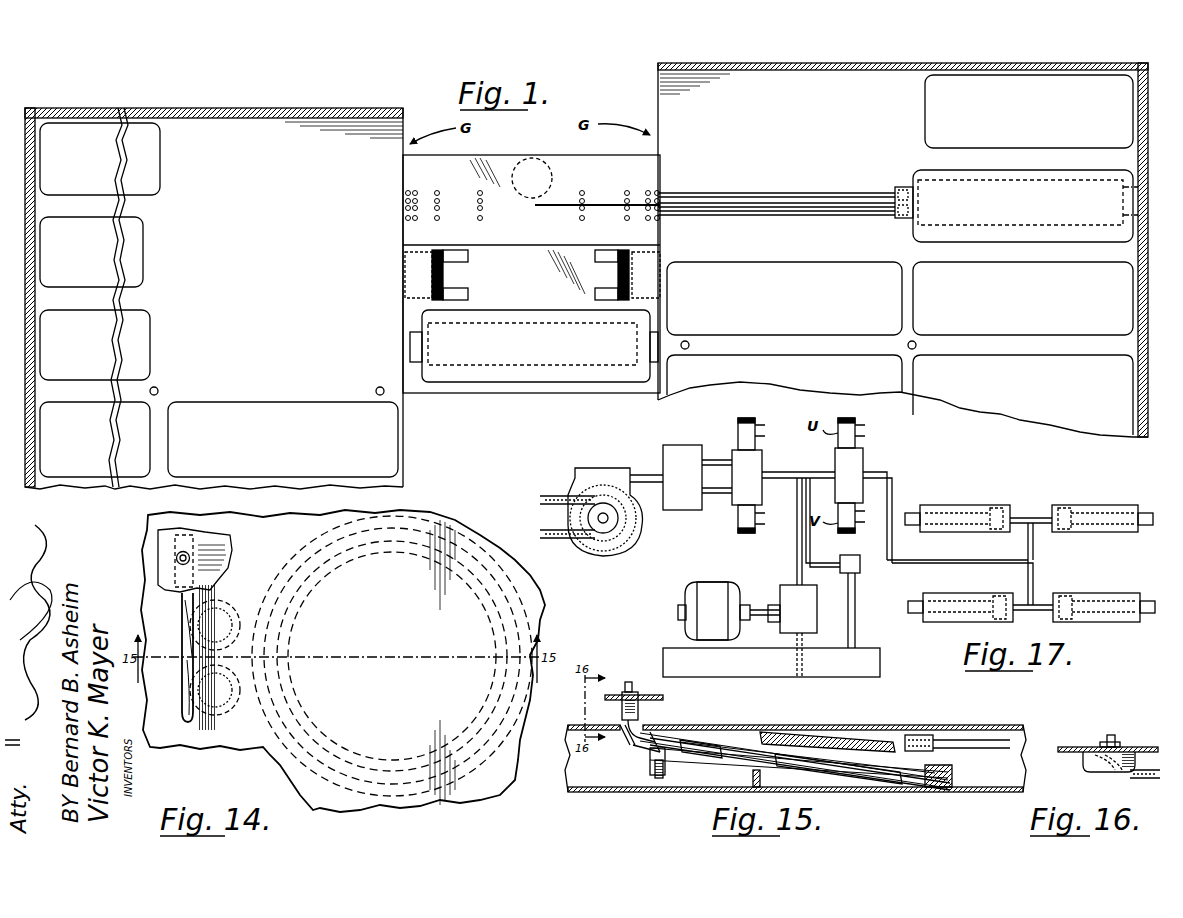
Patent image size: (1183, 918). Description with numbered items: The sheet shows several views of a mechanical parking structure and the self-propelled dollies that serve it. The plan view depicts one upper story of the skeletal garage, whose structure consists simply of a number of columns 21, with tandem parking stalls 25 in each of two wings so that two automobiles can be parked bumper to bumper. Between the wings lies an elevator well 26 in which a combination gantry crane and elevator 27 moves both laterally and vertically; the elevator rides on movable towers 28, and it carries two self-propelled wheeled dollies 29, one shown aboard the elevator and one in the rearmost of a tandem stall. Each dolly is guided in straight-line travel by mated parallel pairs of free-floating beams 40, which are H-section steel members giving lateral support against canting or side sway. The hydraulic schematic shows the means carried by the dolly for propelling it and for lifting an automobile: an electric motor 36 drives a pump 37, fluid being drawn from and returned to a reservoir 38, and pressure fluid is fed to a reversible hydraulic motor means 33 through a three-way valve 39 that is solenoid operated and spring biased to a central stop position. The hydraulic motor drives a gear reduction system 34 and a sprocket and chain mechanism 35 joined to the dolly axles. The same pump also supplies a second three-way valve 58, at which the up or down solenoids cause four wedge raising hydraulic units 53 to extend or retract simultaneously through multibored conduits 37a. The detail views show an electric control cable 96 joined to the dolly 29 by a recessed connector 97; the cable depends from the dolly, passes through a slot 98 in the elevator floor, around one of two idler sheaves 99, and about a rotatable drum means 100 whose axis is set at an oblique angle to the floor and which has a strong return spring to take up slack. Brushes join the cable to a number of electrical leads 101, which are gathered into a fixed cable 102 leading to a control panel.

In FIG. 1, the columns 21 is at (158, 388).
In FIG. 1, the tandem parking stalls 25 is at (143, 226).
In FIG. 1, the elevator well 26 is at (427, 90).
In FIG. 1, the combination gantry crane and elevator 27 is at (462, 408).
In FIG. 14, the combination gantry crane and elevator 27 is at (145, 528).
In FIG. 15, the combination gantry crane and elevator 27 is at (572, 725).
In FIG. 1, the movable columns or towers 28 is at (403, 272).
In FIG. 1, the self-propelled wheeled dolly 29 is at (410, 345).
In FIG. 14, the self-propelled wheeled dolly 29 is at (230, 550).
In FIG. 15, the self-propelled wheeled dolly 29 is at (645, 695).
In FIG. 16, the self-propelled wheeled dolly 29 is at (1073, 747).
In FIG. 17, the hydraulic motor means 33 is at (682, 445).
In FIG. 17, the gear reduction system 34 is at (605, 468).
In FIG. 17, the sprocket and chain mechanism 35 is at (556, 533).
In FIG. 17, the electric motor 36 is at (715, 582).
In FIG. 17, the pump 37 is at (780, 592).
In FIG. 17, the multibored conduits 37a is at (806, 520).
In FIG. 17, the reservoir 38 is at (673, 648).
In FIG. 17, the three-way valve 39 is at (750, 467).
In FIG. 1, the free-floating beams 40 is at (752, 193).
In FIG. 17, the wedge raising hydraulic units 53 is at (960, 505).
In FIG. 17, the three-way valve 58 is at (853, 465).
In FIG. 14, the electric control cable 96 is at (190, 557).
In FIG. 15, the electric control cable 96 is at (628, 682).
In FIG. 16, the electric control cable 96 is at (1111, 735).
In FIG. 14, the recessed connector 97 is at (205, 530).
In FIG. 15, the recessed connector 97 is at (622, 709).
In FIG. 16, the recessed connector 97 is at (1083, 770).
In FIG. 14, the slot 98 is at (185, 675).
In FIG. 15, the slot 98 is at (625, 728).
In FIG. 14, the idler sheaves 99 is at (222, 602).
In FIG. 15, the idler sheaves 99 is at (658, 735).
In FIG. 14, the rotatable drum means 100 is at (280, 725).
In FIG. 15, the rotatable drum means 100 is at (710, 733).
In FIG. 15, the electrical leads 101 is at (862, 732).
In FIG. 15, the fixed cable 102 is at (968, 735).